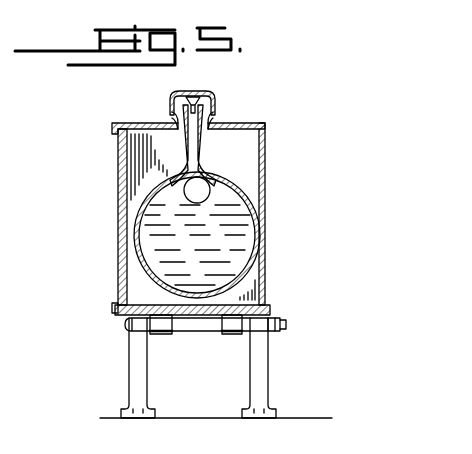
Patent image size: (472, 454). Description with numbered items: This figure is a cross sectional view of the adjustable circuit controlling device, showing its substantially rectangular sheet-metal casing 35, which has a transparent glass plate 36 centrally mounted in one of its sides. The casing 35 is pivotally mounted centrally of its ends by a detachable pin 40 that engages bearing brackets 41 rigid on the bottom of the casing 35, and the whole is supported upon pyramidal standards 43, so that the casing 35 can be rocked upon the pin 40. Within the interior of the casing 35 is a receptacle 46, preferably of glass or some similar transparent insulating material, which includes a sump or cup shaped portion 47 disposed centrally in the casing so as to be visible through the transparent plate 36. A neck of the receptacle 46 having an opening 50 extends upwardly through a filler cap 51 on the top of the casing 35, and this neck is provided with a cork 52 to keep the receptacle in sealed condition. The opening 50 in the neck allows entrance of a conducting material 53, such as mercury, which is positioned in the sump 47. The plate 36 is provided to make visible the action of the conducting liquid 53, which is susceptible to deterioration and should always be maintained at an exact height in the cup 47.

The casing 35 is at (274, 126).
The transparent glass plate 36 is at (118, 179).
The detachable pin 40 is at (200, 331).
The bearing brackets 41 is at (168, 334).
The pyramidal standards 43 is at (138, 360).
The receptacle 46 is at (222, 196).
The sump or cup shaped portion 47 is at (258, 210).
The opening 50 is at (203, 140).
The filler cap 51 is at (215, 108).
The cork 52 is at (200, 92).
The conducting material 53 is at (216, 247).